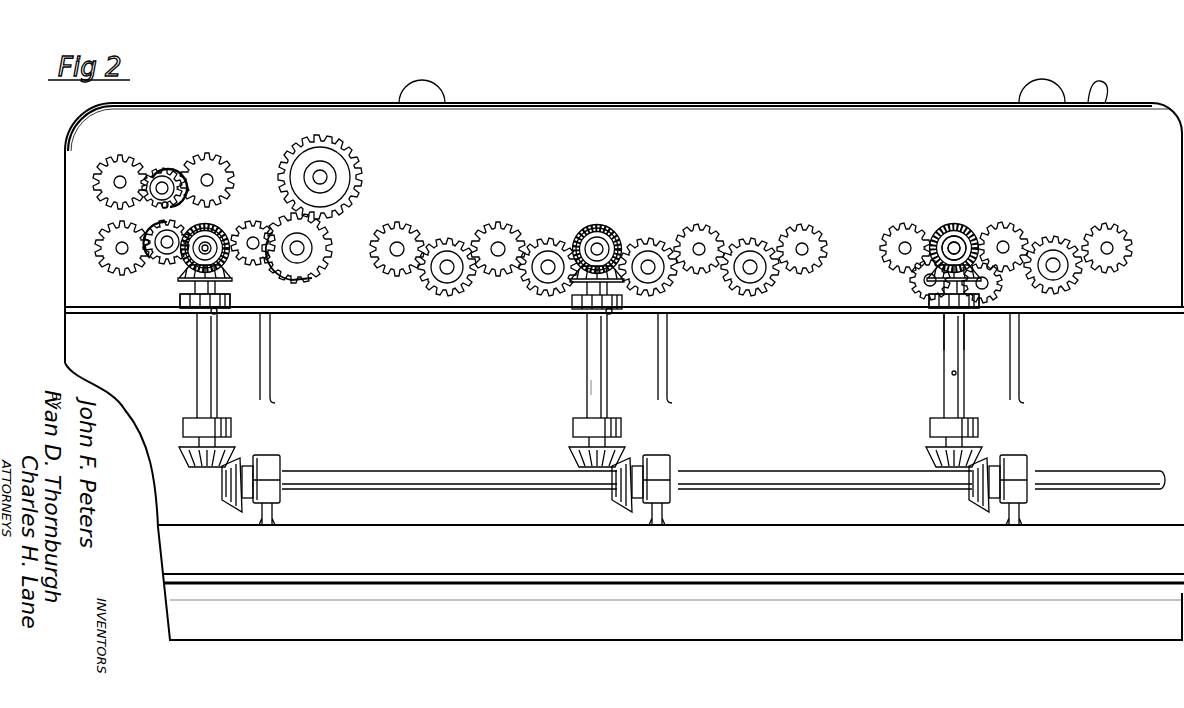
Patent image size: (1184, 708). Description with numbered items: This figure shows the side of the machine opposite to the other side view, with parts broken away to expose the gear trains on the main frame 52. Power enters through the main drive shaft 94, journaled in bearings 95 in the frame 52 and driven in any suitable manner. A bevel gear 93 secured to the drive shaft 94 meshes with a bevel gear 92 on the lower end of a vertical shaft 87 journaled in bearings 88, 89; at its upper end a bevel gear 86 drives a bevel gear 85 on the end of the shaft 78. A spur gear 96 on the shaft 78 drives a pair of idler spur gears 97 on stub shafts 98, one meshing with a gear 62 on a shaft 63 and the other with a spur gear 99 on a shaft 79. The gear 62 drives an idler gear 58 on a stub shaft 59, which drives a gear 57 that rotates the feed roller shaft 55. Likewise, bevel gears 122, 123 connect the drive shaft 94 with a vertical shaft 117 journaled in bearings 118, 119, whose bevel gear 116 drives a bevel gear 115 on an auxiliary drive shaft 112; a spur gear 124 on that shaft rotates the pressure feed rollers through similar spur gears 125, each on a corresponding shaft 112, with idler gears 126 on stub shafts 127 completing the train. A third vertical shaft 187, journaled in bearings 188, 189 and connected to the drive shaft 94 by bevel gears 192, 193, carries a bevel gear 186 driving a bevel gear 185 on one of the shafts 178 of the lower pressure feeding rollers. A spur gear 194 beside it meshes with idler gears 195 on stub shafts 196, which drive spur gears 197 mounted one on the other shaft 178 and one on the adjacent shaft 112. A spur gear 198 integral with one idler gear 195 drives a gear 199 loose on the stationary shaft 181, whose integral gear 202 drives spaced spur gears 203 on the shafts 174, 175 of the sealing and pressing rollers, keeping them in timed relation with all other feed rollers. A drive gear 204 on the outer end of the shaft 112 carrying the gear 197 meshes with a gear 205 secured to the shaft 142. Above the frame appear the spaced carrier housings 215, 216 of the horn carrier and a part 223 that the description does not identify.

The main frame 52 is at (676, 569).
The shaft 55 is at (1108, 246).
The gear 57 is at (1131, 238).
The idler gear 58 is at (1047, 243).
The stub shaft 59 is at (1054, 263).
The gear 62 is at (1004, 228).
The shaft 63 is at (1005, 246).
The shaft 78 is at (954, 246).
The shaft 79 is at (903, 247).
The bevel gear 85 is at (948, 235).
The bevel gear 86 is at (957, 334).
The vertical shaft 87 is at (954, 373).
The bearing 88 is at (946, 298).
The bearing 89 is at (942, 423).
The bevel gear 92 is at (938, 452).
The bevel gear 93 is at (983, 463).
The main drive shaft 94 is at (766, 478).
The bearings 95 is at (270, 470).
The spur gear 96 is at (968, 247).
The idler spur gears 97 is at (913, 288).
The stub shafts 98 is at (927, 284).
The spur gear 99 is at (903, 232).
The auxiliary drive shaft 112 is at (300, 247).
The bevel gear 115 is at (648, 239).
The bevel gear 116 is at (590, 304).
The vertical shaft 117 is at (594, 383).
The bearing 118 is at (610, 303).
The bearing 119 is at (608, 420).
The bevel gear 122 is at (621, 452).
The bevel gear 123 is at (633, 460).
The spur gear 124 is at (597, 246).
The spur gears 125 is at (400, 224).
The idler gears 126 is at (439, 240).
The stub shafts 127 is at (546, 270).
The shaft 142 is at (320, 177).
The shaft 174 is at (208, 178).
The shaft 175 is at (122, 178).
The shafts 178 is at (119, 252).
The stationary shaft 181 is at (180, 178).
The bevel gear 185 is at (214, 226).
The bevel gear 186 is at (232, 290).
The vertical shaft 187 is at (203, 361).
The bearing 188 is at (214, 311).
The bearing 189 is at (192, 423).
The bevel gear 192 is at (228, 452).
The bevel gear 193 is at (240, 460).
The spur gear 194 is at (226, 236).
The idler gears 195 is at (158, 252).
The stub shafts 196 is at (170, 240).
The spur gears 197 is at (95, 240).
The spur gear 198 is at (167, 246).
The gear 199 is at (147, 208).
The gear 202 is at (163, 182).
The spur gears 203 is at (118, 170).
The drive gear 204 is at (312, 270).
The gear 205 is at (337, 165).
The carrier housing 215 is at (1040, 90).
The carrier housing 216 is at (430, 88).
The lever 223 is at (1098, 90).